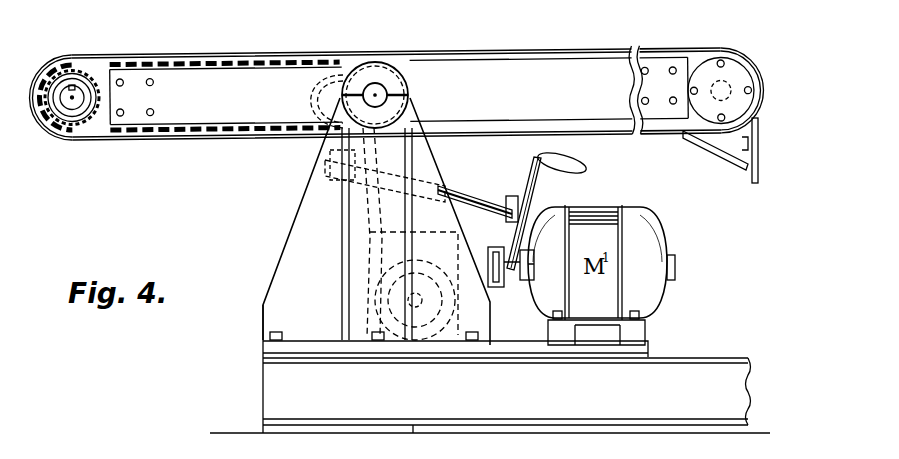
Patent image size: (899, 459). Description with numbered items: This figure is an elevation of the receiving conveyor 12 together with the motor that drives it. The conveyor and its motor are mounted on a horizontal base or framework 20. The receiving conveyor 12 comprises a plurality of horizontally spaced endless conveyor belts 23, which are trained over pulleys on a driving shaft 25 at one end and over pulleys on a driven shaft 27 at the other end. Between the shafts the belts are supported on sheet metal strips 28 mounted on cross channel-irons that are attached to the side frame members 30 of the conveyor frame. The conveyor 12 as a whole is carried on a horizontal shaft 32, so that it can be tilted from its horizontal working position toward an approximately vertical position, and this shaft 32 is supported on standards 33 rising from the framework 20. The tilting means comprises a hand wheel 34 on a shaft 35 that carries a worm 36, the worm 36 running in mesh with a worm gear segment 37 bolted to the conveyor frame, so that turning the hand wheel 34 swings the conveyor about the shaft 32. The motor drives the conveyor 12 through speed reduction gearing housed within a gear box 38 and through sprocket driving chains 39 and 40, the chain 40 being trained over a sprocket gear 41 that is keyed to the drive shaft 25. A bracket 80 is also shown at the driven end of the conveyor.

The receiving conveyor 12 is at (429, 52).
The horizontal base or framework 20 is at (705, 373).
The endless conveyor belts 23 is at (515, 54).
The driving shaft 25 is at (72, 107).
The driven shaft 27 is at (732, 95).
The sheet metal strips 28 is at (603, 62).
The side frame members 30 is at (527, 106).
The horizontal shaft 32 is at (378, 97).
The standards 33 is at (303, 239).
The hand wheel 34 is at (536, 178).
The shaft 35 is at (507, 186).
The worm 36 is at (350, 180).
The worm gear segment 37 is at (306, 98).
The gear box 38 is at (455, 249).
The sprocket driving chain 39 is at (365, 216).
The sprocket driving chain 40 is at (236, 140).
The sprocket gear 41 is at (100, 103).
The bracket 80 is at (758, 132).